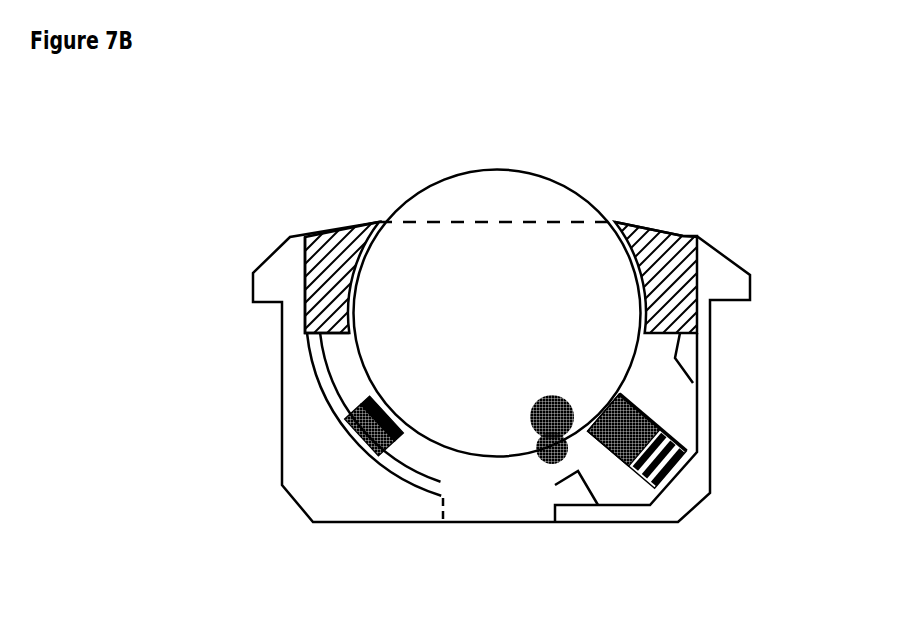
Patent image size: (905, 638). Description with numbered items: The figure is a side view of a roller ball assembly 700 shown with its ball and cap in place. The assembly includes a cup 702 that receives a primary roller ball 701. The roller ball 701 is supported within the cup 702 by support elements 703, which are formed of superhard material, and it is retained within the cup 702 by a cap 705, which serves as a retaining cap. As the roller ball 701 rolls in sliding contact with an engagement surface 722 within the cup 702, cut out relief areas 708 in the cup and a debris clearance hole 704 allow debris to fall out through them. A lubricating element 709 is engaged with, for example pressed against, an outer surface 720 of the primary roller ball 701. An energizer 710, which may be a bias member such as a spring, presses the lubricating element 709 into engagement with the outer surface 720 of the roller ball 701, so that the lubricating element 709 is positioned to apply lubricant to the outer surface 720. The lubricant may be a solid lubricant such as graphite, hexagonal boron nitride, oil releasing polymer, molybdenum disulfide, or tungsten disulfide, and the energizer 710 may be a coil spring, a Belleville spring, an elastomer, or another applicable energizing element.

The roller ball assembly 700 is at (240, 130).
The primary roller ball 701 is at (458, 157).
The cup 702 is at (280, 402).
The support elements 703 is at (362, 431).
The debris clearance hole 704 is at (530, 500).
The cap 705 is at (668, 230).
The cut out relief areas 708 is at (636, 428).
The lubricating element 709 is at (650, 389).
The energizer 710 is at (676, 436).
The outer surface 720 is at (495, 167).
The engagement surface 722 is at (395, 411).